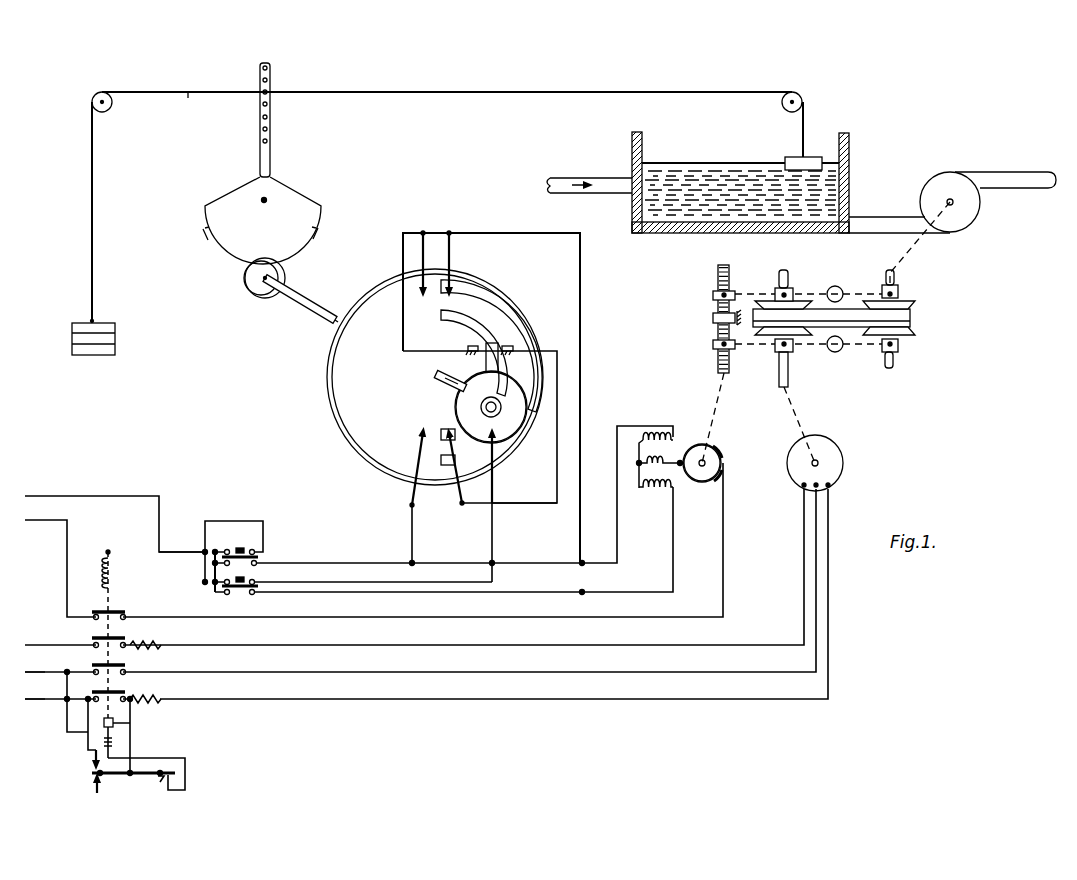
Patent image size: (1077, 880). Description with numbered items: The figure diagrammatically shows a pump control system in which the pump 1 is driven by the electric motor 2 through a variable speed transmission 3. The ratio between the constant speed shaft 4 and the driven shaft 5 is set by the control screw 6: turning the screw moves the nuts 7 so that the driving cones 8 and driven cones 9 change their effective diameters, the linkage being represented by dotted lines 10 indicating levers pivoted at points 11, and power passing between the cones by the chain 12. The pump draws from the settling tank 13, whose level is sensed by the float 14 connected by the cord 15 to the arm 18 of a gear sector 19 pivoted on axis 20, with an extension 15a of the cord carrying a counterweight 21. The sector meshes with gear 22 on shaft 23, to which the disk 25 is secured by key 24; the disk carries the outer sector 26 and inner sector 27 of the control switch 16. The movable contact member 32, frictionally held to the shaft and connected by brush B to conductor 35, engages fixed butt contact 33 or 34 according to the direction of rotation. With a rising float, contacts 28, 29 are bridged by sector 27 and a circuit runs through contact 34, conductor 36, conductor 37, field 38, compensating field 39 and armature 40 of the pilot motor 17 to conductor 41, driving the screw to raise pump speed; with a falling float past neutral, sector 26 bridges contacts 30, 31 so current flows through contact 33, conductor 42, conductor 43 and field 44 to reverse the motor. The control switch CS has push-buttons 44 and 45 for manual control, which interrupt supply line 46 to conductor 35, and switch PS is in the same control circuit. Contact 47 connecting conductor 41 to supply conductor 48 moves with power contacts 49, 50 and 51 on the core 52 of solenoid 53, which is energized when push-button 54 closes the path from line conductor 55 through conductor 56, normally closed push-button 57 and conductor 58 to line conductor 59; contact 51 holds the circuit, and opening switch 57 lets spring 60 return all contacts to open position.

The pump 1 is at (965, 222).
The electric motor 2 is at (838, 458).
The variable speed transmission 3 is at (836, 269).
The shaft 4 is at (780, 380).
The driven shaft 5 is at (893, 364).
The control screw 6 is at (718, 272).
The nuts 7 is at (715, 298).
The driving cones 8 is at (738, 315).
The driven cones 9 is at (916, 306).
The dotted lines 10 is at (858, 292).
The points 11 is at (828, 290).
The chain 12 is at (893, 322).
The settling tank 13 is at (849, 190).
The float 14 is at (795, 160).
The cord 15 is at (440, 92).
The extension of the cord 15a is at (188, 106).
The control switch 16 is at (298, 385).
The pilot motor 17 is at (710, 514).
The arm 18 is at (270, 150).
The gear sector 19 is at (300, 203).
The axis 20 is at (266, 198).
The counterweight 21 is at (110, 325).
The gear 22 is at (262, 300).
The shaft 23 is at (300, 305).
The key 24 is at (433, 371).
The disk 25 is at (355, 422).
The outer sector 26 is at (472, 292).
The inner sector 27 is at (472, 323).
The contact 28 is at (415, 446).
The contact 29 is at (468, 469).
The contact 30 is at (433, 245).
The contact 31 is at (452, 253).
The movable contact member 32 is at (517, 428).
The fixed butt contact 33 is at (470, 347).
The fixed butt contact 34 is at (515, 340).
The conductor 35 is at (350, 580).
The conductor 36 is at (537, 503).
The conductor 37 is at (596, 563).
The field 38 is at (655, 437).
The compensating field 39 is at (672, 461).
The armature 40 is at (712, 475).
The conductor 41 is at (398, 593).
The conductor 42 is at (403, 338).
The conductor 43 is at (580, 338).
The motor field / push-button 44 is at (655, 492).
The push-button 45 is at (245, 578).
The supply line 46 is at (165, 556).
The contact 47 is at (125, 612).
The supply line conductor 48 is at (65, 600).
The contact 49 is at (125, 638).
The contact 50 is at (125, 665).
The contact 51 is at (125, 692).
The core or armature member 52 is at (118, 722).
The solenoid 53 is at (112, 742).
The push-button 54 is at (132, 793).
The line conductor 55 is at (45, 699).
The conductor 56 is at (88, 750).
The normally closed switch or push-button 57 is at (160, 782).
The conductor 58 is at (185, 780).
The line conductor 59 is at (45, 672).
The spring 60 is at (112, 563).
The brush B is at (506, 430).
The switch PS is at (92, 607).
The control switch CS is at (200, 576).